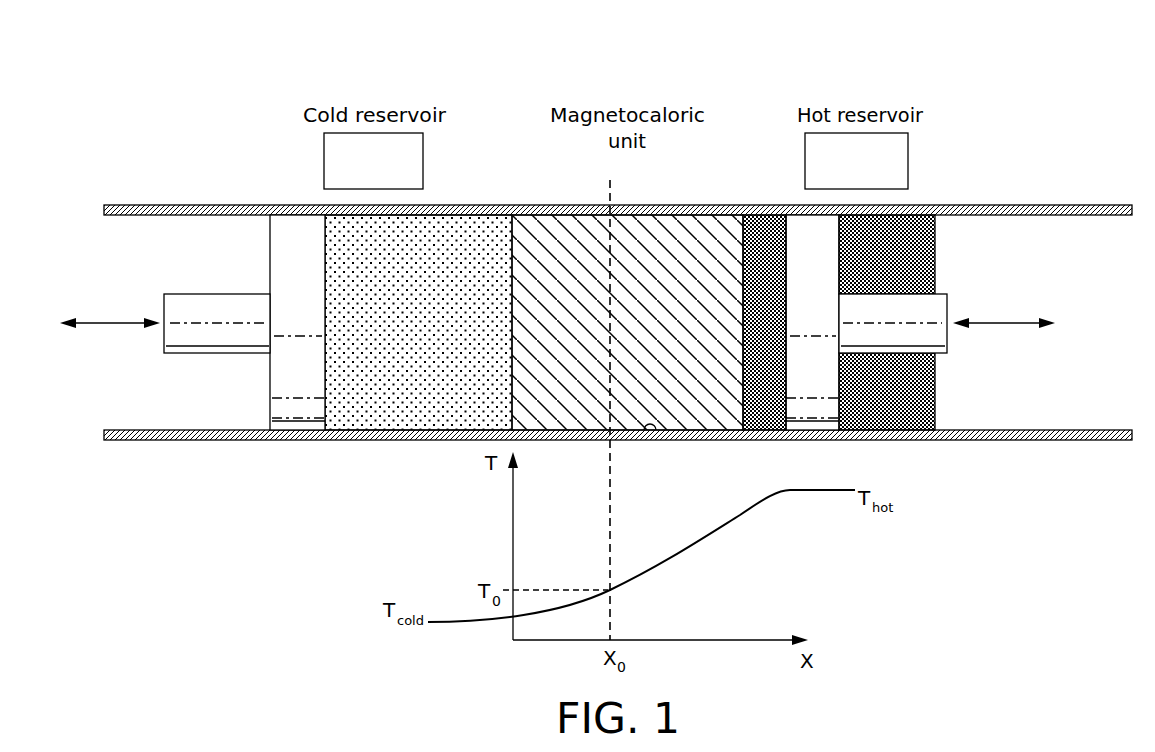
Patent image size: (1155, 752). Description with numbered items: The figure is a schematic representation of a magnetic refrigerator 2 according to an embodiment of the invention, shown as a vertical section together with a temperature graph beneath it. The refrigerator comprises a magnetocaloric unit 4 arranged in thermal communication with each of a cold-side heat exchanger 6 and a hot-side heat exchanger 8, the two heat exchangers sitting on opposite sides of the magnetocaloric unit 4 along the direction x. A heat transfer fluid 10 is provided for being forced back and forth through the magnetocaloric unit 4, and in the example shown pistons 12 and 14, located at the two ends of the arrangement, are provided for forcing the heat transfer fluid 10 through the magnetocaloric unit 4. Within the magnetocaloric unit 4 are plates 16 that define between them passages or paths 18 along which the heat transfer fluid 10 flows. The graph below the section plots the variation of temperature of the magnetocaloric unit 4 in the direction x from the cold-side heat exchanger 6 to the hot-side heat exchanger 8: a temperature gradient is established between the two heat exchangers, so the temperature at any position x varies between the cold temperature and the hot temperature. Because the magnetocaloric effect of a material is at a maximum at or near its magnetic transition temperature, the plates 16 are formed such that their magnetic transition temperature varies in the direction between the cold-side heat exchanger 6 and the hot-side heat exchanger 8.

The magnetocaloric heat pump system 2 is at (483, 70).
The magnetocaloric unit 4 is at (697, 222).
The cold-side heat exchanger 6 is at (323, 160).
The hot-side heat exchanger 8 is at (908, 160).
The heat transfer fluid 10 is at (414, 432).
The piston 12 is at (211, 294).
The piston 14 is at (947, 300).
The plates 16 is at (715, 421).
The passages or paths 18 is at (652, 440).